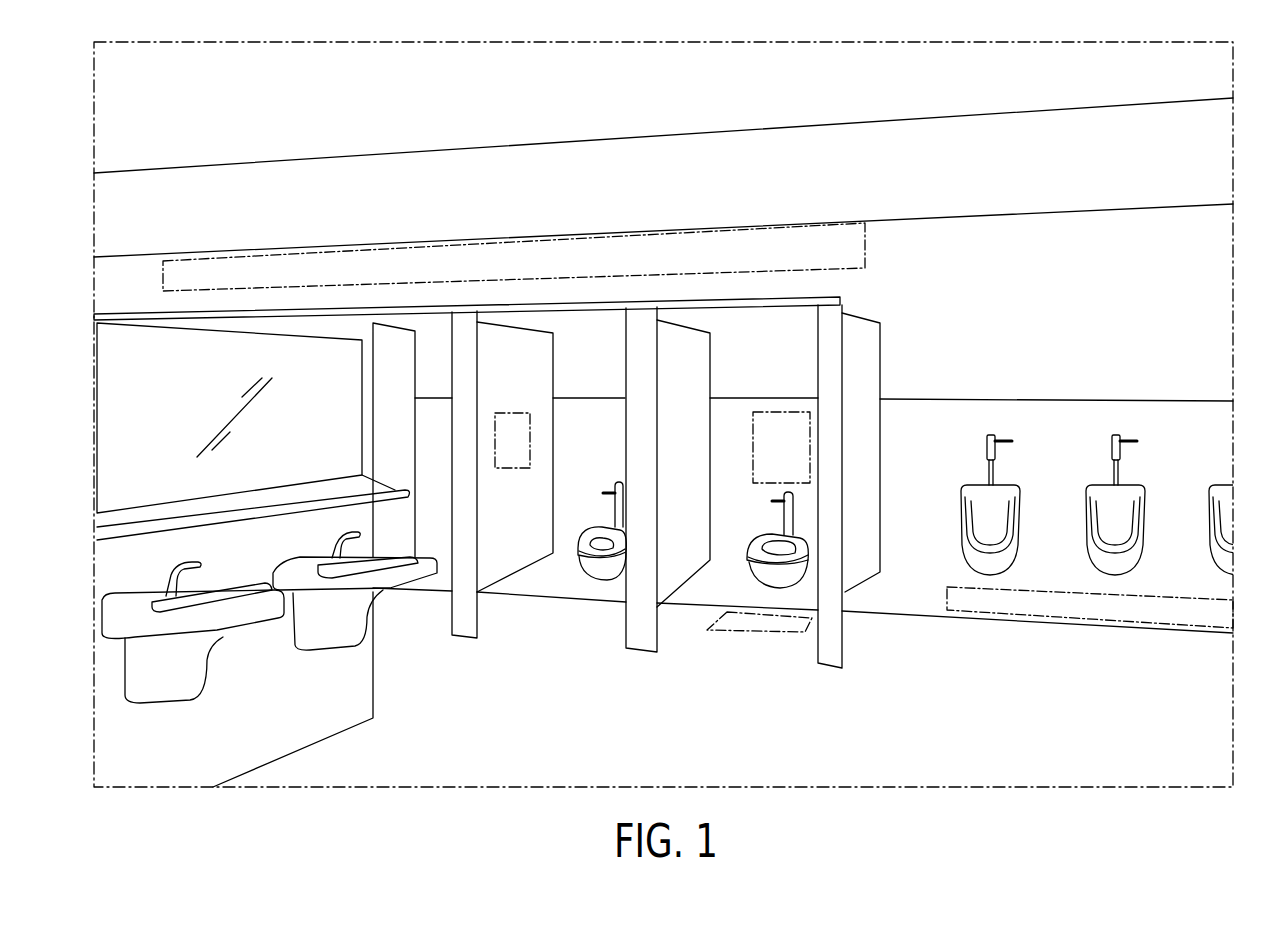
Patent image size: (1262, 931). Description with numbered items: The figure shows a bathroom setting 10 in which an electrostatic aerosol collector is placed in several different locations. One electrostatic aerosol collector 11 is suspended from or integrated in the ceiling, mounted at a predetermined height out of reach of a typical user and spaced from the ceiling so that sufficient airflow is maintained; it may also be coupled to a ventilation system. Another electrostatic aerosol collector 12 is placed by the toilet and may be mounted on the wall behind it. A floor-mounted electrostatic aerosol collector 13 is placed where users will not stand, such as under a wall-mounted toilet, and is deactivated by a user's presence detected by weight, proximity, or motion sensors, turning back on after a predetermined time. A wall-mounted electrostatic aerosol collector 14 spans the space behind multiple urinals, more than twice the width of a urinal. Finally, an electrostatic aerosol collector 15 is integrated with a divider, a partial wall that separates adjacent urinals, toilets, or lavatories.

The bathroom setting 10 is at (124, 79).
The electrostatic aerosol collector 11 is at (208, 270).
The electrostatic aerosol collector 12 is at (780, 430).
The electrostatic aerosol collector 13 is at (757, 632).
The electrostatic aerosol collector 14 is at (1037, 607).
The electrostatic aerosol collector 15 is at (512, 470).